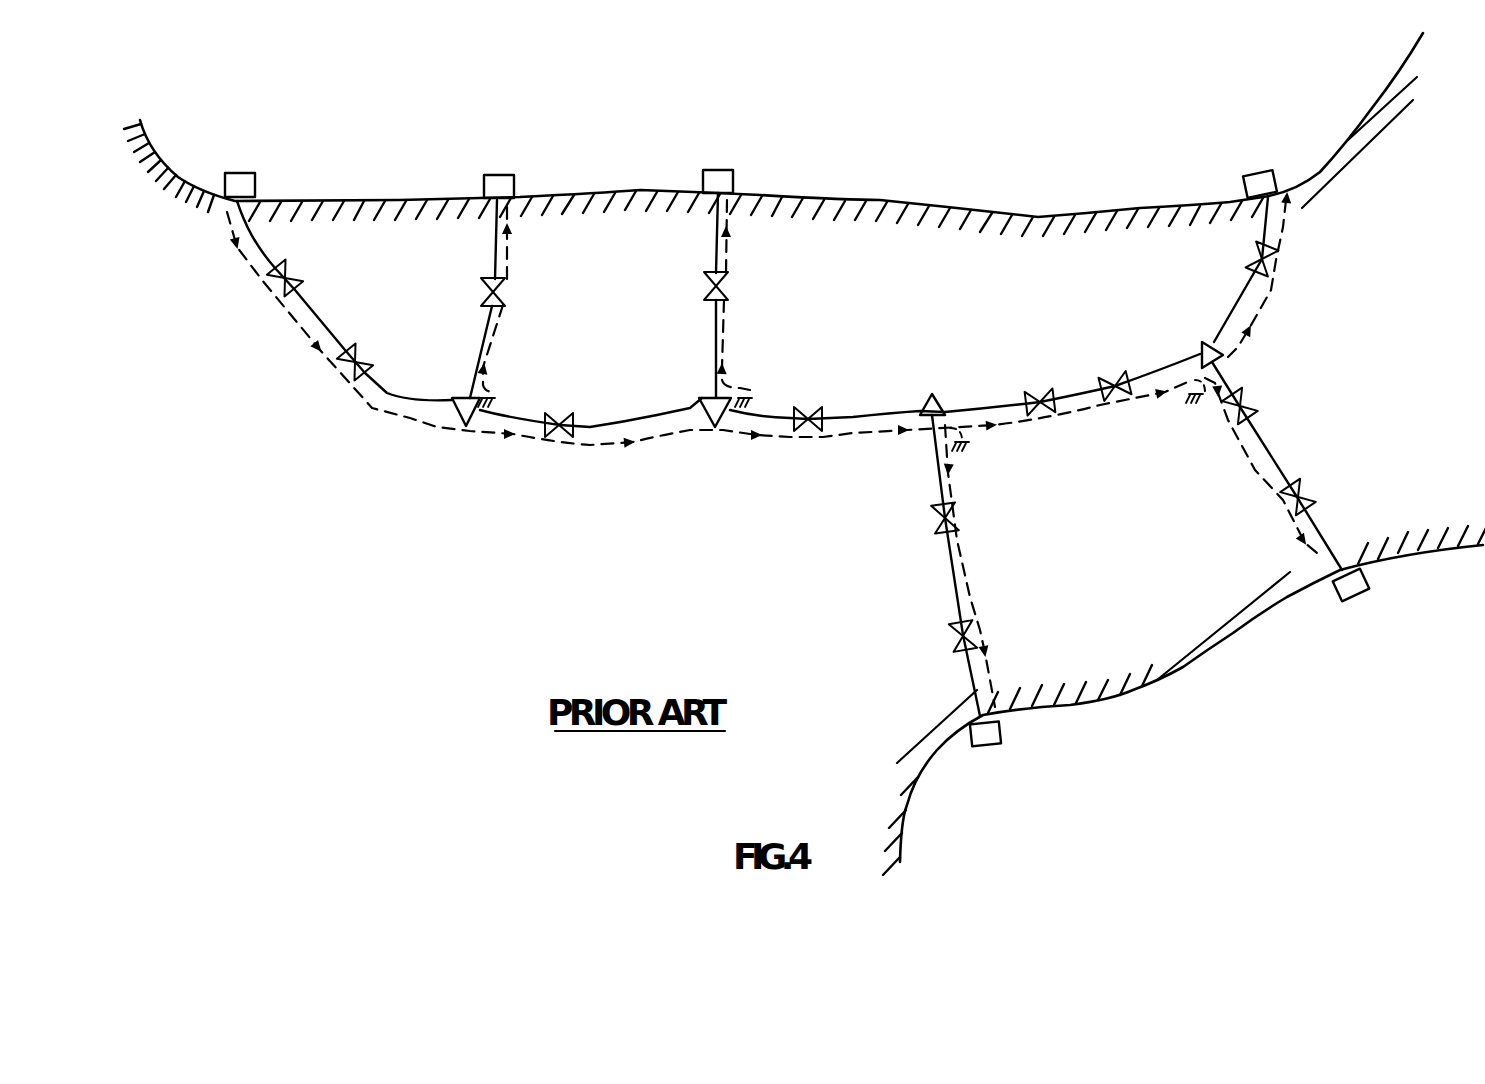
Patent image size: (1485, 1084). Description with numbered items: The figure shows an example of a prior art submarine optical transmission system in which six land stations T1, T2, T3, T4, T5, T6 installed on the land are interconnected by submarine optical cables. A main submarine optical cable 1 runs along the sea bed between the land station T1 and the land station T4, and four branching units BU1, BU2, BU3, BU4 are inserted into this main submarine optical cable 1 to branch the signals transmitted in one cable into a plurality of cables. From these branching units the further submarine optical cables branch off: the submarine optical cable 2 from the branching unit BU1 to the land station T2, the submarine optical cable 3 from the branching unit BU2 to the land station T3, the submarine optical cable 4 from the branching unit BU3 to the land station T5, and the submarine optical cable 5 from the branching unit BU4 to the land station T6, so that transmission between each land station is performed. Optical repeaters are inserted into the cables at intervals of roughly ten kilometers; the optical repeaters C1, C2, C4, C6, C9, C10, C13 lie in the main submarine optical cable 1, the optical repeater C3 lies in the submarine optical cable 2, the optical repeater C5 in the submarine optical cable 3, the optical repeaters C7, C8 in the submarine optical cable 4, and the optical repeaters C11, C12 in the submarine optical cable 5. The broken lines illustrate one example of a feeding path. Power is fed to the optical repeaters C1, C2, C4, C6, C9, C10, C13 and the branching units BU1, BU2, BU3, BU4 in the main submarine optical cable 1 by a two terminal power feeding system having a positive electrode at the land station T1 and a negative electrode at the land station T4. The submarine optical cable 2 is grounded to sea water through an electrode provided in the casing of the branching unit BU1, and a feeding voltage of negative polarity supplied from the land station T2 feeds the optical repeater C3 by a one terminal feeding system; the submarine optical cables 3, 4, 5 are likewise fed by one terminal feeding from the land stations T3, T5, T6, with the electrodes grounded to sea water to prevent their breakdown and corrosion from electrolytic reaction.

The main submarine optical cable 1 is at (386, 398).
The submarine optical cable 2 is at (500, 253).
The submarine optical cable 3 is at (720, 255).
The submarine optical cable 4 is at (958, 609).
The submarine optical cable 5 is at (1277, 455).
The land station T1 is at (259, 170).
The land station T2 is at (506, 170).
The land station T3 is at (726, 166).
The land station T4 is at (1255, 166).
The land station T5 is at (1001, 753).
The land station T6 is at (1366, 600).
The branching unit BU1 is at (466, 433).
The branching unit BU2 is at (724, 433).
The branching unit BU3 is at (938, 409).
The branching unit BU4 is at (1241, 372).
The optical repeater C1 is at (267, 287).
The optical repeater C2 is at (342, 375).
The optical repeater C3 is at (471, 302).
The optical repeater C4 is at (563, 446).
The optical repeater C5 is at (695, 296).
The optical repeater C6 is at (810, 442).
The optical repeater C7 is at (927, 525).
The optical repeater C8 is at (944, 643).
The optical repeater C9 is at (1043, 420).
The optical repeater C10 is at (1128, 406).
The optical repeater C11 is at (1225, 422).
The optical repeater C12 is at (1278, 506).
The optical repeater C13 is at (1291, 260).